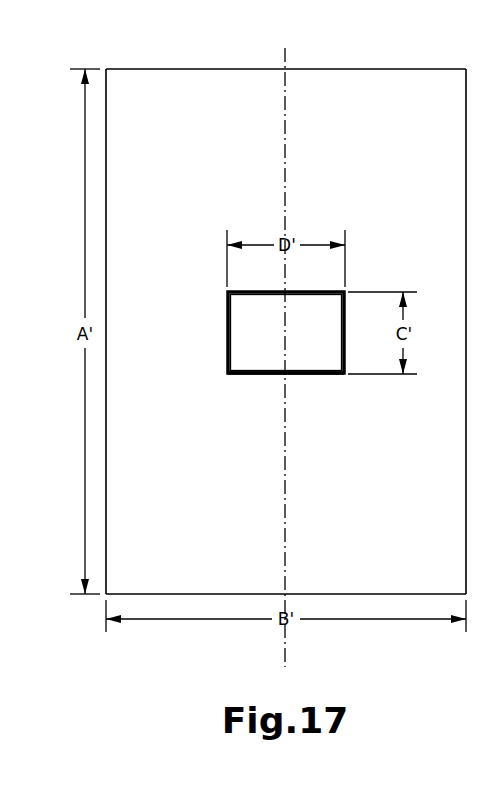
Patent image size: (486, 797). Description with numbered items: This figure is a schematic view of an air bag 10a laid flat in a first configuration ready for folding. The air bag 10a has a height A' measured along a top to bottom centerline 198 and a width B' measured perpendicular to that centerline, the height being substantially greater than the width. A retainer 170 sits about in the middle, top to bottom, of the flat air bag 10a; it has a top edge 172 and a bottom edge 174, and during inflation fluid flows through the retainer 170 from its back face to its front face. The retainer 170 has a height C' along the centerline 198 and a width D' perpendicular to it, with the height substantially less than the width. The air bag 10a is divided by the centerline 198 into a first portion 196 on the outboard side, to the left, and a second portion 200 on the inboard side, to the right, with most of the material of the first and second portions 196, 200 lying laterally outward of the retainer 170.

The air bag 10a is at (212, 645).
The retainer 170 is at (251, 388).
The top edge 172 is at (332, 292).
The bottom edge 174 is at (322, 375).
The first portion 196 is at (196, 96).
The top to bottom centerline 198 is at (285, 48).
The second portion 200 is at (408, 96).